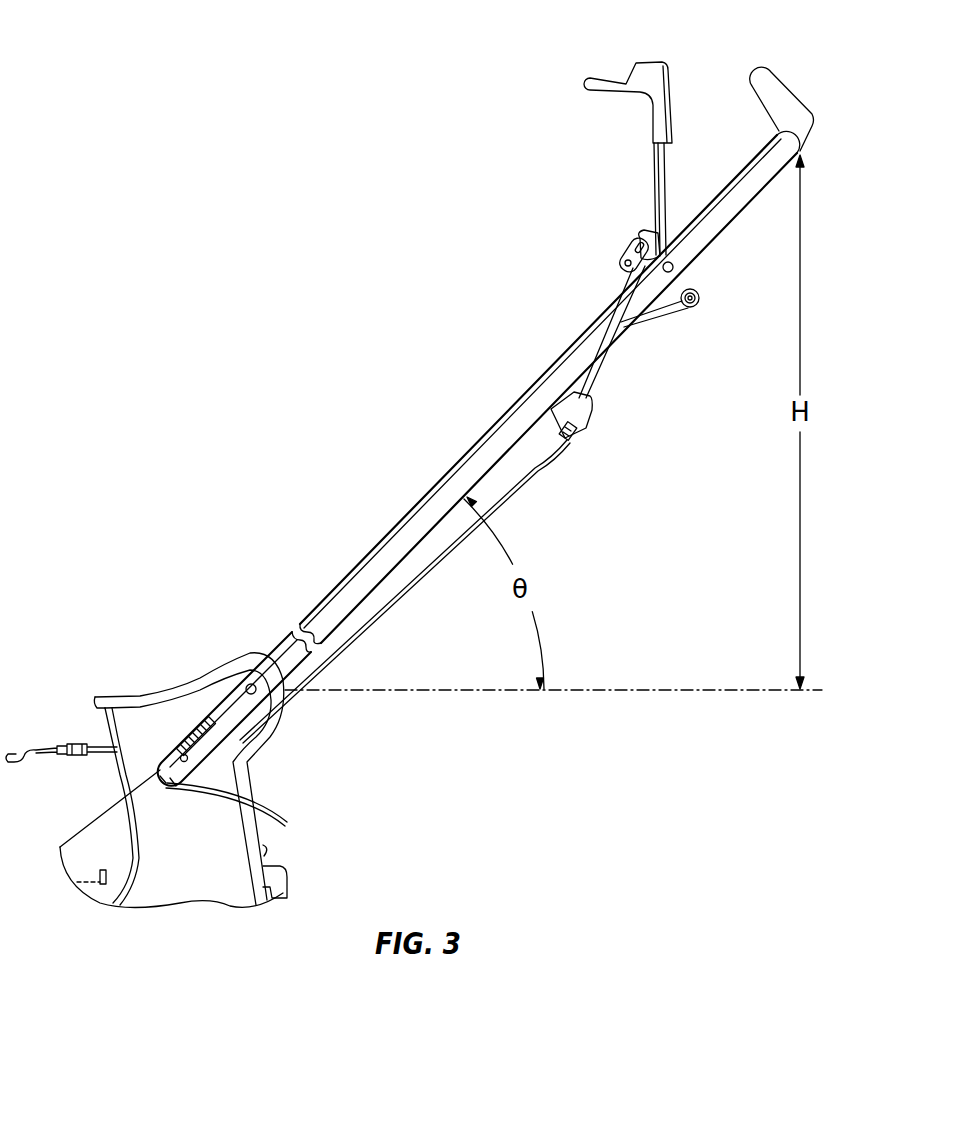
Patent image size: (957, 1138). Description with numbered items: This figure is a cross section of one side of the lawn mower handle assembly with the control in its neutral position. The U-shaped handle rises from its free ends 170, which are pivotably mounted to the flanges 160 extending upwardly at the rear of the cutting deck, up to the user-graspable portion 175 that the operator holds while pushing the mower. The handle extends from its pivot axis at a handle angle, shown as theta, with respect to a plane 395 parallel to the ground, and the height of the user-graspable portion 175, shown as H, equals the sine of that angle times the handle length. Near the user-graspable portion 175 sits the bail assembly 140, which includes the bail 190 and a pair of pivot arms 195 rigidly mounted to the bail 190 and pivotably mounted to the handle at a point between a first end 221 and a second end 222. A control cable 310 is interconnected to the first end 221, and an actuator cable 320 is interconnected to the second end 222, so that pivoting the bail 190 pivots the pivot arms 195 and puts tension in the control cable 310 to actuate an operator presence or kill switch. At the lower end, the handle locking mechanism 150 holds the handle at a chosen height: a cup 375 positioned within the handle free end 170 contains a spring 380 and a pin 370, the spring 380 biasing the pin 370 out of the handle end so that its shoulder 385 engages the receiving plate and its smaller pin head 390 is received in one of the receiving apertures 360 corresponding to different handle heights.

The bail assembly 140 is at (568, 63).
The handle locking mechanism 150 is at (151, 683).
The flanges 160 is at (223, 840).
The free ends 170 is at (213, 728).
The user-graspable portion 175 is at (765, 82).
The bail 190 is at (653, 153).
The pivot arms 195 is at (648, 238).
The first end 221 is at (617, 235).
The second end 222 is at (710, 305).
The control cable 310 is at (589, 392).
The actuator cable 320 is at (668, 310).
The receiving apertures 360 is at (160, 760).
The pin 370 is at (238, 785).
The cup 375 is at (226, 730).
The spring 380 is at (194, 760).
The shoulder 385 is at (175, 774).
The pin head 390 is at (168, 775).
The plane 395 is at (645, 693).